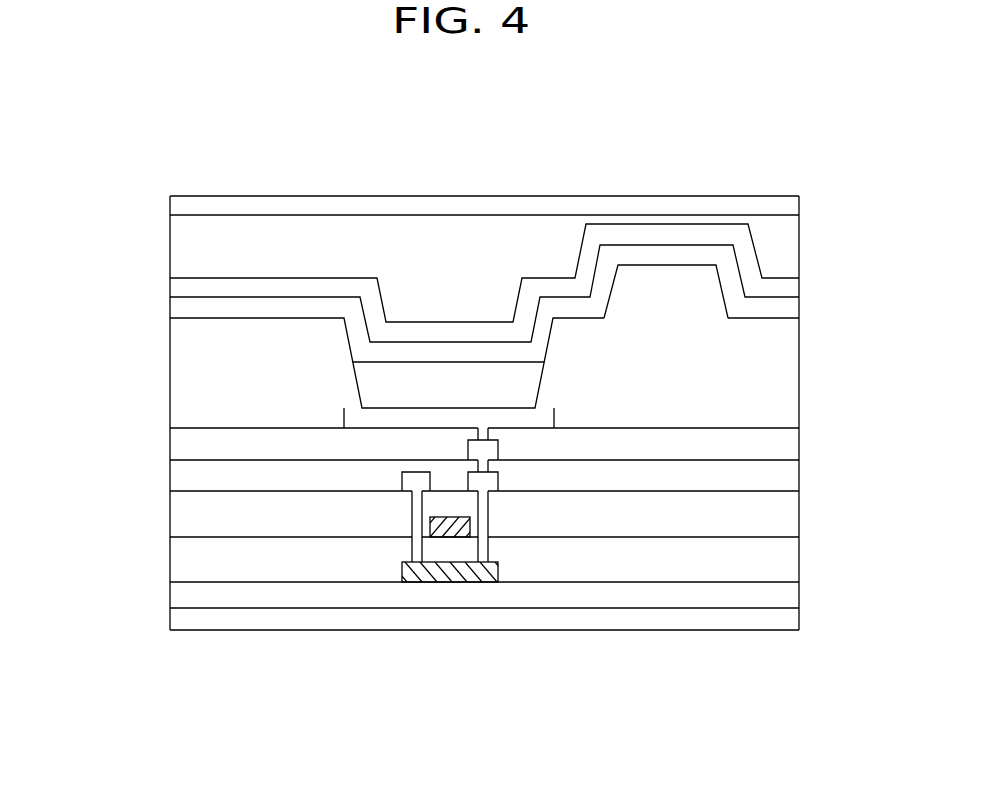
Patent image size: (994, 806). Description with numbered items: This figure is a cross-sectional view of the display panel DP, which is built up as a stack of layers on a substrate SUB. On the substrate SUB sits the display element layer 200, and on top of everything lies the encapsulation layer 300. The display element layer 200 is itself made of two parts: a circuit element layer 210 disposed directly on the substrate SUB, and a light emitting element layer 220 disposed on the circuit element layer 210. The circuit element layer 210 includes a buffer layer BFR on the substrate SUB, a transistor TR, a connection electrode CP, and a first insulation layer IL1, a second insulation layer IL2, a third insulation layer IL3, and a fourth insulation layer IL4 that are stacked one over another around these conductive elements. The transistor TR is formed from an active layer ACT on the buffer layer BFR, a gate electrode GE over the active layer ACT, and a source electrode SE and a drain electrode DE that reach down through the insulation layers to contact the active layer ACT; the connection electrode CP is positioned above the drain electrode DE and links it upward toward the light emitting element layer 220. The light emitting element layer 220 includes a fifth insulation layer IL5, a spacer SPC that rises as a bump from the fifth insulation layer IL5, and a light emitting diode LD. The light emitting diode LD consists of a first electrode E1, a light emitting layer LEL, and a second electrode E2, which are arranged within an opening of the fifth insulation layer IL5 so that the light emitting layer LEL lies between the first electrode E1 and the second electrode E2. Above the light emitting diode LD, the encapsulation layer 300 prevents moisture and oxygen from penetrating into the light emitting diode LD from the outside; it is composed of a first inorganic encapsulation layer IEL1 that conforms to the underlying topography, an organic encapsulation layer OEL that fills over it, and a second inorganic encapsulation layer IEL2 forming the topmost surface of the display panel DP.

The display panel DP is at (826, 127).
The display element layer 200 is at (414, 417).
The encapsulation layer 300 is at (83, 195).
The second inorganic encapsulation layer IEL2 is at (170, 207).
The organic encapsulation layer OEL is at (170, 252).
The first inorganic encapsulation layer IEL1 is at (170, 289).
The light emitting element layer 220 is at (83, 320).
The fifth insulation layer IL5 is at (170, 379).
The spacer SPC is at (670, 283).
The light emitting diode LD is at (517, 133).
The first electrode E1 is at (407, 412).
The light emitting layer LEL is at (453, 376).
The second electrode E2 is at (502, 352).
The circuit element layer 210 is at (83, 438).
The fourth insulation layer IL4 is at (170, 446).
The third insulation layer IL3 is at (170, 479).
The second insulation layer IL2 is at (170, 516).
The first insulation layer IL1 is at (170, 561).
The buffer layer BFR is at (170, 595).
The substrate SUB is at (170, 622).
The transistor TR is at (528, 695).
The source electrode SE is at (400, 478).
The active layer ACT is at (432, 572).
The gate electrode GE is at (452, 538).
The drain electrode DE is at (492, 482).
The connection electrode CP is at (495, 450).